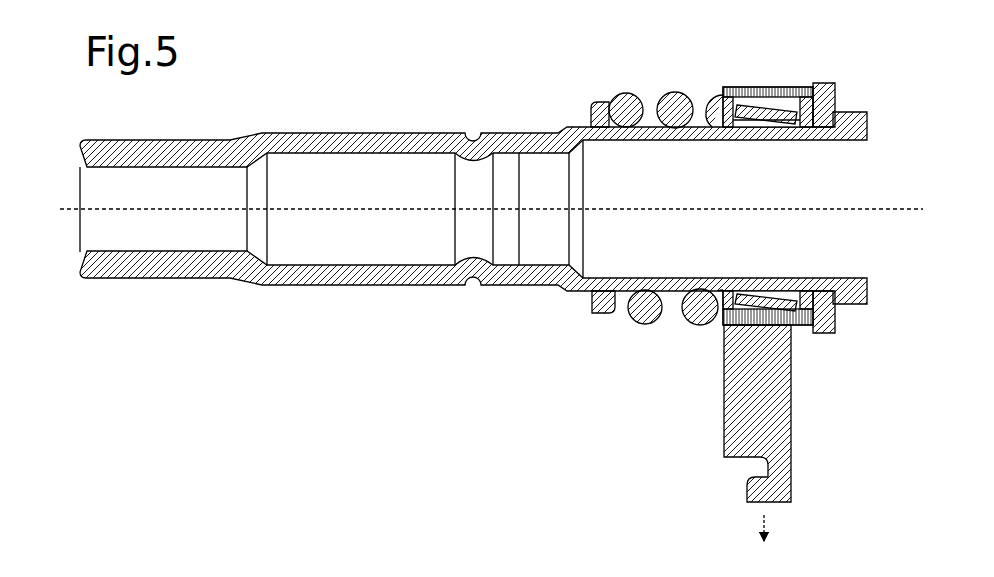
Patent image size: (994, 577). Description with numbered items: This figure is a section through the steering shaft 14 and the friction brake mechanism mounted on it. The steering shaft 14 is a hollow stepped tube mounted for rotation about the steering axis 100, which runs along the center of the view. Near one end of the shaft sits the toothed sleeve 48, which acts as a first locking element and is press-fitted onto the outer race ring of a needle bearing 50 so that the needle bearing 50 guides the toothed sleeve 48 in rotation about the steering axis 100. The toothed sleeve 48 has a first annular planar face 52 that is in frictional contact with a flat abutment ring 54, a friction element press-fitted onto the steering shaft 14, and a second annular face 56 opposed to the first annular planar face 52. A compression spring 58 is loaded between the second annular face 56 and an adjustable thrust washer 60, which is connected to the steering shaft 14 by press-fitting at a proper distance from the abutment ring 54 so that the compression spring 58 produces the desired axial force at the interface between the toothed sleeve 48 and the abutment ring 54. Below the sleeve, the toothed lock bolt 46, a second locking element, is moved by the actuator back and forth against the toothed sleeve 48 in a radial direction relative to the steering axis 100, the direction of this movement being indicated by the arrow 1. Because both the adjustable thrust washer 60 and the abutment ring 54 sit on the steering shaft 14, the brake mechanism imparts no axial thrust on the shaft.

The steering axis 100 is at (63, 213).
The steering shaft 14 is at (297, 132).
The adjustable thrust washer 60 is at (594, 101).
The compression spring 58 is at (676, 92).
The toothed sleeve 48 is at (770, 86).
The abutment ring 54 is at (834, 100).
The first annular planar face 52 is at (832, 318).
The second annular face 56 is at (723, 324).
The needle bearing 50 is at (798, 324).
The toothed lock bolt 46 is at (730, 432).
The direction arrow 1 is at (754, 528).